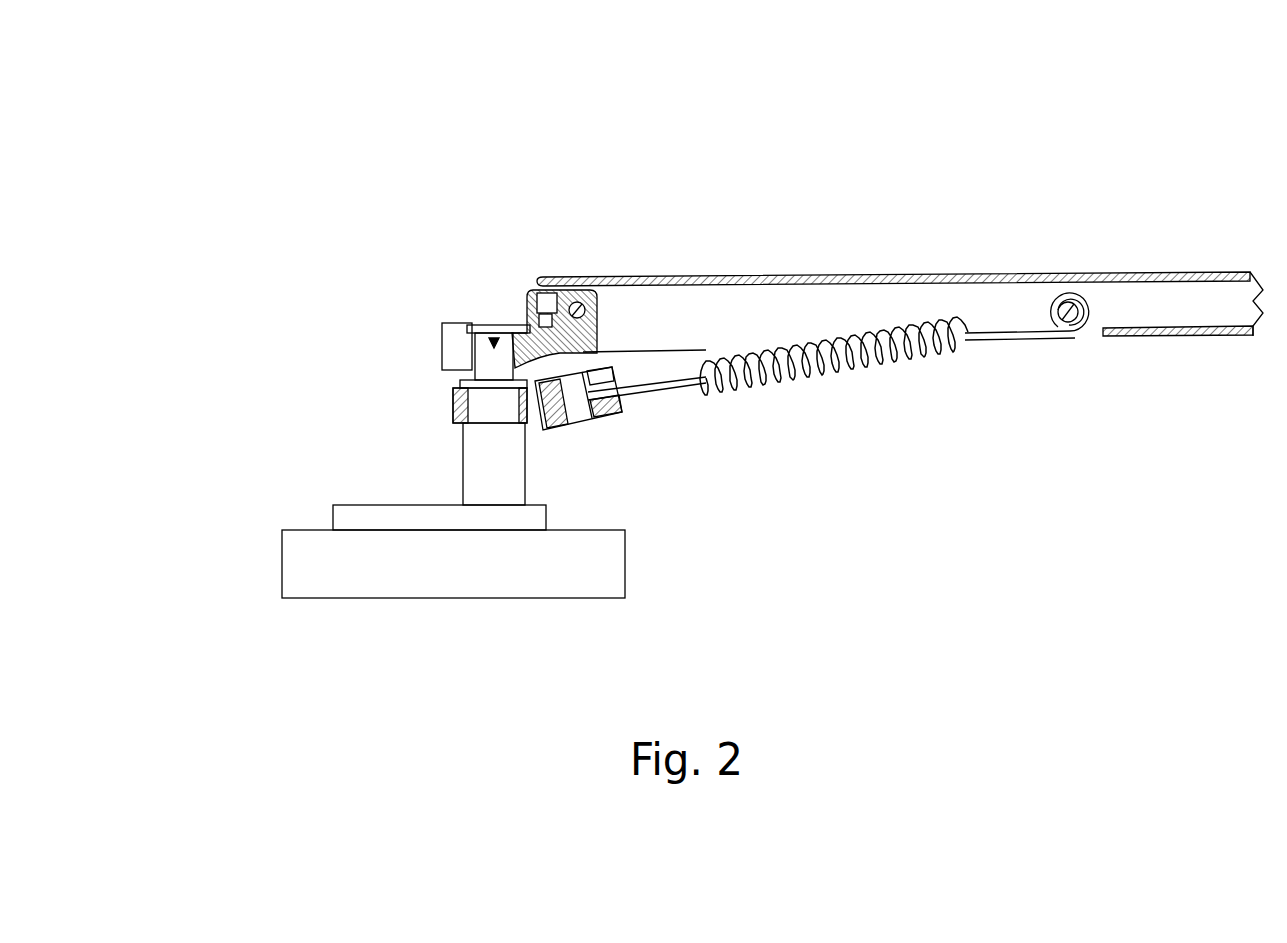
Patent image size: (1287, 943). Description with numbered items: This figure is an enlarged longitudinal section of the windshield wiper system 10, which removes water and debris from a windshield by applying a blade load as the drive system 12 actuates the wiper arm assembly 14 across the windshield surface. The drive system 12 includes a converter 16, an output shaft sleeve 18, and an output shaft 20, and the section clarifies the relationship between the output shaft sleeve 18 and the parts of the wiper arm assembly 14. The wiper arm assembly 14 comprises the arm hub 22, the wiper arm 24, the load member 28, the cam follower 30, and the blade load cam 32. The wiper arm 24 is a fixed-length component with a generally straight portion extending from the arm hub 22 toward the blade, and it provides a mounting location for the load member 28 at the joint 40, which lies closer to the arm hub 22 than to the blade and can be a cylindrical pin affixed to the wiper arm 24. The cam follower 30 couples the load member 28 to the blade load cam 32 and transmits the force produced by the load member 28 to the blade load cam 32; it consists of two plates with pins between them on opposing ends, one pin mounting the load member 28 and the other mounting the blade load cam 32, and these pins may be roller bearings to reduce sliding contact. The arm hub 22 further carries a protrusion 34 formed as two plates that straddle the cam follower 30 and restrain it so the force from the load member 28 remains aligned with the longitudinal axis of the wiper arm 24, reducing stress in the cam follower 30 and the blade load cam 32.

The windshield wiper system 10 is at (928, 532).
The drive system 12 is at (398, 688).
The wiper arm assembly 14 is at (1097, 192).
The converter 16 is at (280, 565).
The output shaft sleeve 18 is at (461, 458).
The output shaft 20 is at (493, 334).
The arm hub 22 is at (440, 328).
The wiper arm 24 is at (842, 276).
The load member 28 is at (1008, 345).
The cam follower 30 is at (575, 433).
The blade load cam 32 is at (452, 405).
The protrusion 34 is at (565, 365).
The joint 40 is at (1050, 310).